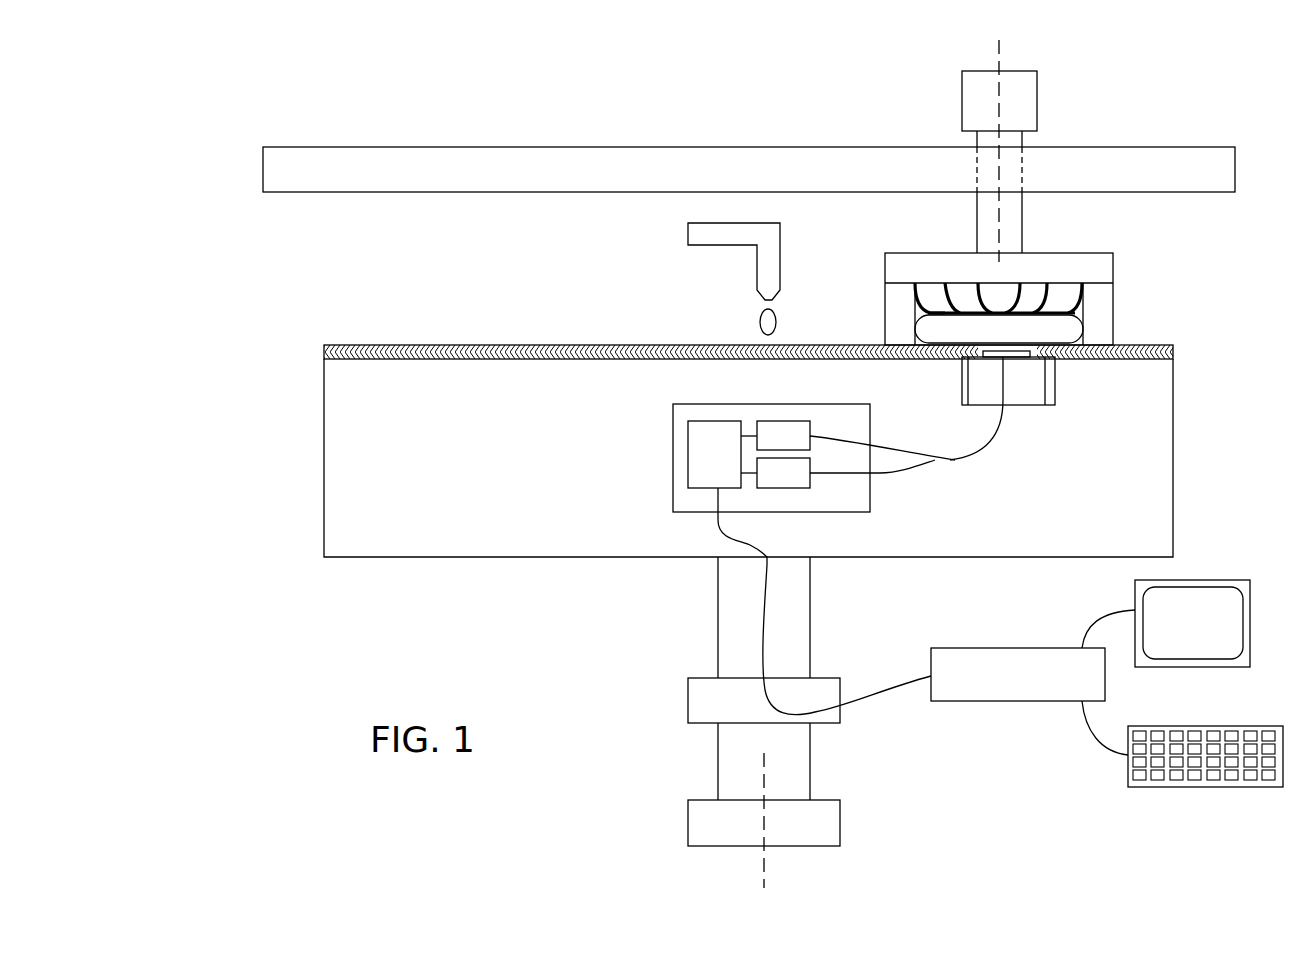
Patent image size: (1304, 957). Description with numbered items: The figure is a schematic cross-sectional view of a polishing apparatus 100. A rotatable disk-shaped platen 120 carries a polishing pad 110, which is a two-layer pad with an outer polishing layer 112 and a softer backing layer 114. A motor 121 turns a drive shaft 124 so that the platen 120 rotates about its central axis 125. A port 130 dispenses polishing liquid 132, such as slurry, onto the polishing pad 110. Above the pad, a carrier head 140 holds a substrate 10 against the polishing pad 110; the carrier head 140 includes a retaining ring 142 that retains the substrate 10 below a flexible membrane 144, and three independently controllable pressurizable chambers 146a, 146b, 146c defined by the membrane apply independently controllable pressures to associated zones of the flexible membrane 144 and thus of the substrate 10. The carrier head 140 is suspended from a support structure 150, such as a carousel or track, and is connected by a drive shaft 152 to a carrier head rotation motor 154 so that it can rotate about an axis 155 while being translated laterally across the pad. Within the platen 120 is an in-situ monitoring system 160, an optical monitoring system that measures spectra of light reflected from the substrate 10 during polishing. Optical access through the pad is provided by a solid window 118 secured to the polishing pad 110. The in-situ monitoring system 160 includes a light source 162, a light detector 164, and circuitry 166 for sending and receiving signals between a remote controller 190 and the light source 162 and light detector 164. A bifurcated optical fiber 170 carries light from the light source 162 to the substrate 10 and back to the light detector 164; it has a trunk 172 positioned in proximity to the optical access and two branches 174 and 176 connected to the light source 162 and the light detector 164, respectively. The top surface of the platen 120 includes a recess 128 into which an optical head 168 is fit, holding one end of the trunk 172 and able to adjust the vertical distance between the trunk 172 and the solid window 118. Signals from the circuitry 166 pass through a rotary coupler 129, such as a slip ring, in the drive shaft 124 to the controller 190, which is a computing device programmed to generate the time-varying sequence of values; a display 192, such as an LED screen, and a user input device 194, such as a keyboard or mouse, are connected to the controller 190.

The polishing apparatus 100 is at (319, 110).
The substrate 10 is at (999, 329).
The polishing pad 110 is at (793, 422).
The outer polishing layer 112 is at (1175, 348).
The backing layer 114 is at (1175, 360).
The solid window 118 is at (1013, 357).
The platen 120 is at (1175, 472).
The motor 121 is at (840, 822).
The drive shaft 124 is at (810, 622).
The axis 125 is at (764, 866).
The recess 128 is at (962, 380).
The rotary coupler 129 is at (688, 706).
The port 130 is at (757, 262).
The polishing liquid 132 is at (760, 322).
The carrier head 140 is at (370, 298).
The retaining ring 142 is at (1113, 315).
The flexible membrane 144 is at (1052, 316).
The chamber 146a is at (1000, 300).
The chamber 146b is at (1040, 300).
The chamber 146c is at (1070, 300).
The support structure 150 is at (1203, 147).
The drive shaft 152 is at (977, 233).
The carrier head rotation motor 154 is at (962, 108).
The axis 155 is at (1003, 47).
The in-situ monitoring system 160 is at (718, 508).
The light source 162 is at (775, 435).
The light detector 164 is at (775, 473).
The circuitry 166 is at (714, 454).
The optical head 168 is at (1045, 392).
The bifurcated optical fiber 170 is at (959, 462).
The trunk 172 is at (982, 458).
The branch 174 is at (838, 440).
The branch 176 is at (838, 473).
The controller 190 is at (965, 701).
The display 192 is at (1235, 667).
The user input device 194 is at (1218, 787).